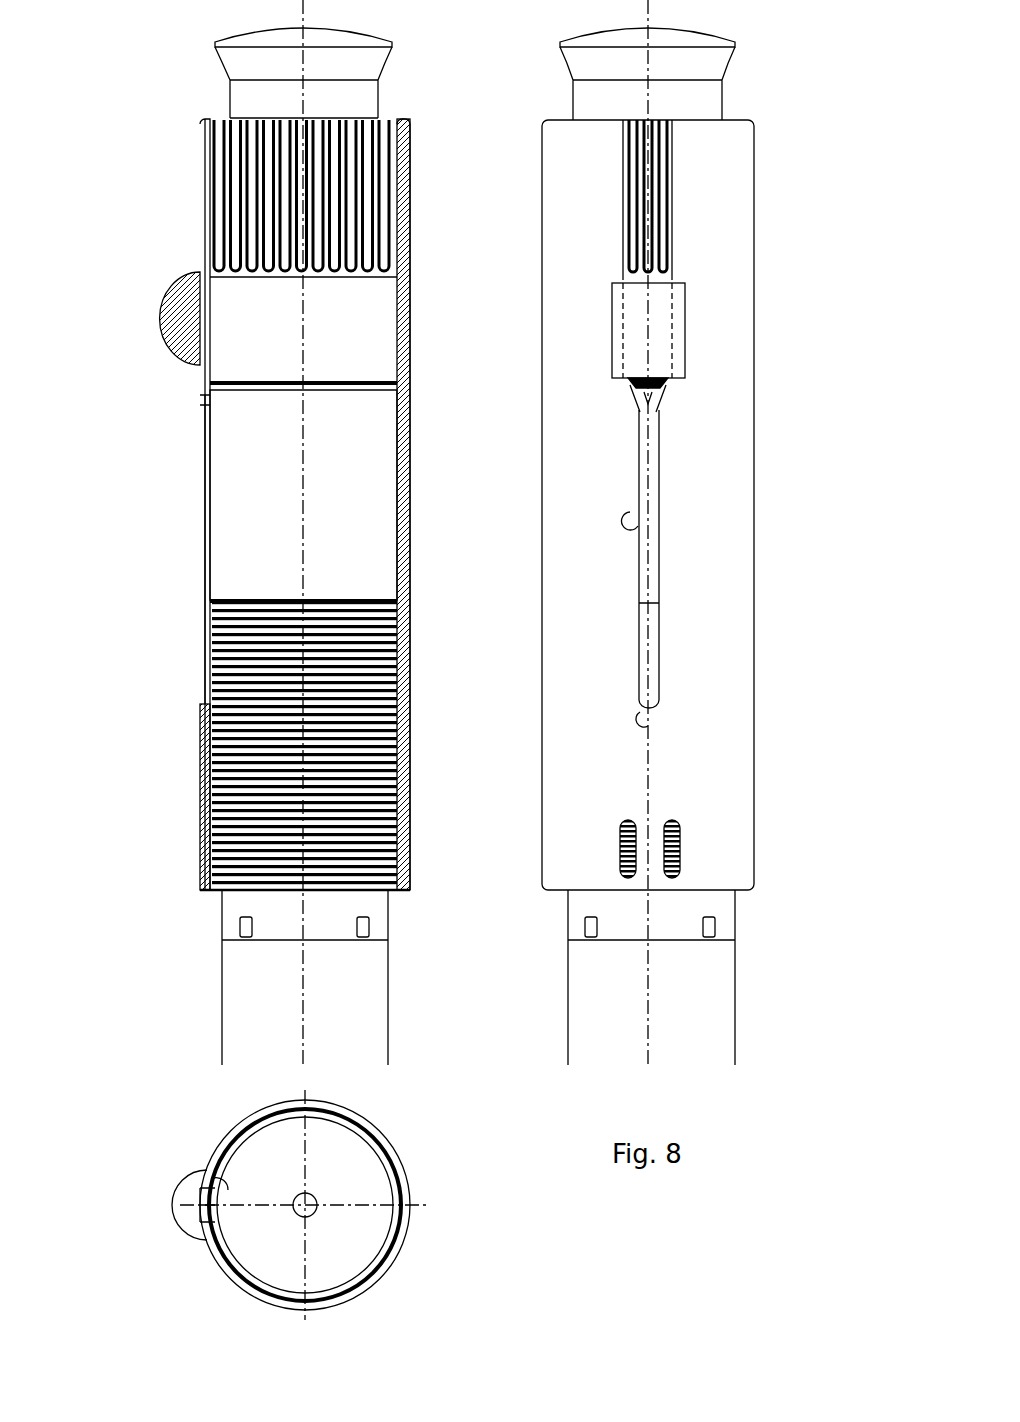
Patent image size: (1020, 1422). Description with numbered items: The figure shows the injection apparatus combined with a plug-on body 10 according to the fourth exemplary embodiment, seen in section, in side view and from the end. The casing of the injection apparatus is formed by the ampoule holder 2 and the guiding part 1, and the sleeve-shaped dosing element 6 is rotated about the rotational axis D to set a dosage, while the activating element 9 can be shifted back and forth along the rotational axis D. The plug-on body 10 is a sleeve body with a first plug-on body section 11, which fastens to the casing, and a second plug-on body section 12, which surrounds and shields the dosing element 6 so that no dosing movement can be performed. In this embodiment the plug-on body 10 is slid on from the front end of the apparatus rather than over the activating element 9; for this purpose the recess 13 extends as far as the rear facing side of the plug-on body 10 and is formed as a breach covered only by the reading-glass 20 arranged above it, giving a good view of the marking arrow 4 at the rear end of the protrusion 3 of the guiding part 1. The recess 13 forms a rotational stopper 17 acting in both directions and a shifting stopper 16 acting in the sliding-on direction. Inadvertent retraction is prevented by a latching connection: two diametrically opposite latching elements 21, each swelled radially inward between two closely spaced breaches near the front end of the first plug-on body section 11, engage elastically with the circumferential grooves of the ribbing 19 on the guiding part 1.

The guiding part 1 is at (258, 545).
The ampoule holder 2 is at (360, 973).
The protrusion 3 is at (205, 478).
The marking arrow 4 is at (205, 395).
The dosing element 6 is at (250, 358).
The activating element 9 is at (325, 27).
The plug-on body 10 is at (441, 126).
The first plug-on body section 11 is at (202, 808).
The second plug-on body section 12 is at (200, 193).
The recess 13 is at (655, 395).
The shifting stopper 16 is at (198, 708).
The rotational stopper 17 is at (620, 530).
The ribbing 19 is at (392, 893).
The reading-glass 20 is at (170, 312).
The latching element 21 is at (648, 855).
The rotational axis D is at (305, 1005).